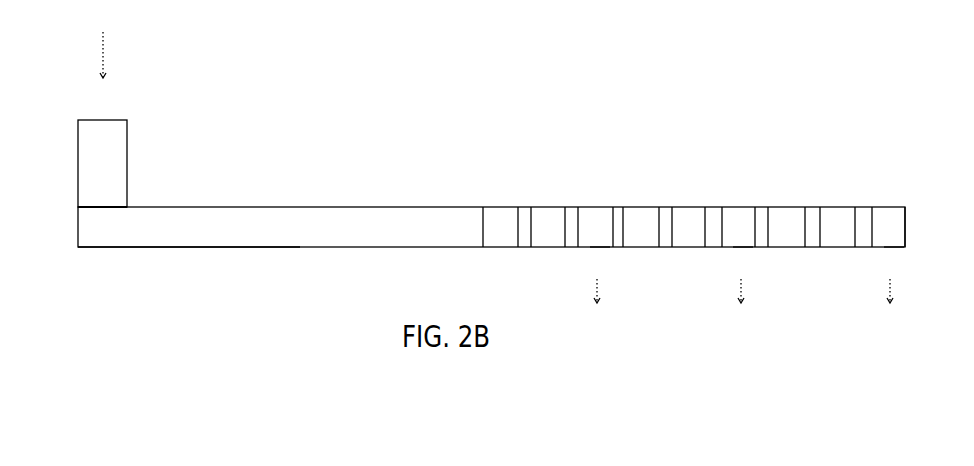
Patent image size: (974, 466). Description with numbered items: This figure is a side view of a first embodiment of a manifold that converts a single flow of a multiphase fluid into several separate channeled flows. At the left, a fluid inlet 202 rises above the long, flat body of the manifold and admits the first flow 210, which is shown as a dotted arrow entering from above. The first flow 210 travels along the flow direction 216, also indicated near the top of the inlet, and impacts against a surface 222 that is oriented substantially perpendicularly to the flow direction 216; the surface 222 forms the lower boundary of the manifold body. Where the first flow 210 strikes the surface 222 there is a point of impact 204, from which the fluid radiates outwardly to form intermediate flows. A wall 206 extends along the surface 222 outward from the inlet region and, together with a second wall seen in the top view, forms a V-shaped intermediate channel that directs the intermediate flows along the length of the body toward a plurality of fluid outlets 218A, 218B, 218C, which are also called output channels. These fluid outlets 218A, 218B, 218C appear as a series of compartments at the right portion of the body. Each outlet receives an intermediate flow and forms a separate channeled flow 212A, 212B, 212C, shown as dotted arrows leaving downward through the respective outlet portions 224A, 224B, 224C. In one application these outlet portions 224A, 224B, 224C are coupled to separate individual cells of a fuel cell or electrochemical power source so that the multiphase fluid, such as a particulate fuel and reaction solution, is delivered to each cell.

The fluid inlet 202 is at (104, 117).
The point of impact 204 is at (108, 240).
The wall 206 is at (263, 222).
The first flow 210 is at (105, 39).
The flow direction 216 is at (103, 47).
The surface 222 is at (145, 246).
The fluid outlet 218A is at (582, 215).
The fluid outlet 218B is at (738, 213).
The fluid outlet 218C is at (887, 213).
The outlet portion 224A is at (599, 247).
The outlet portion 224B is at (742, 247).
The outlet portion 224C is at (893, 247).
The channeled flow 212A is at (602, 289).
The channeled flow 212B is at (745, 289).
The channeled flow 212C is at (893, 290).